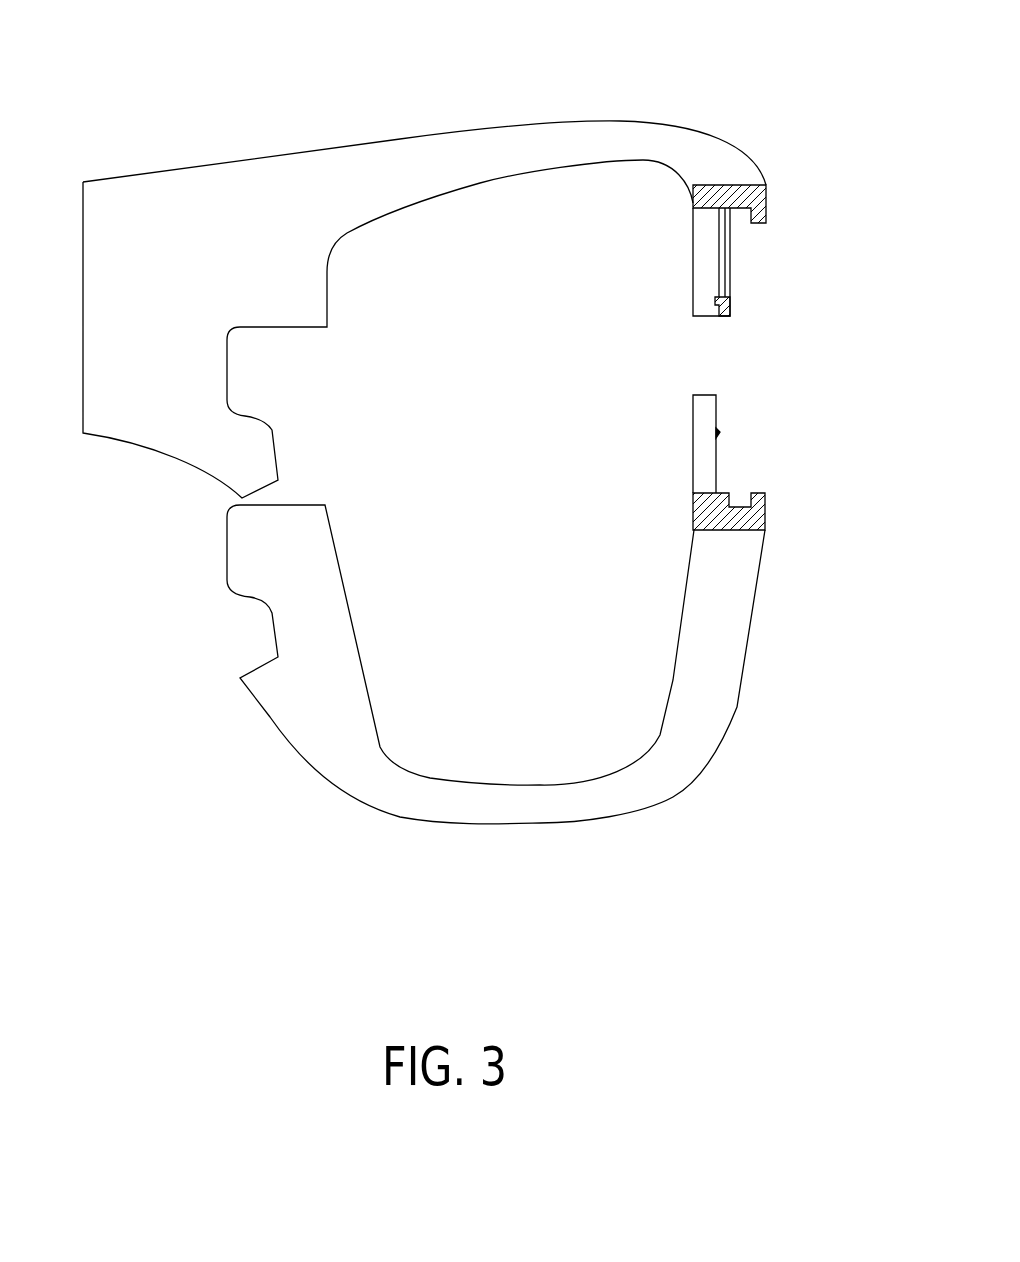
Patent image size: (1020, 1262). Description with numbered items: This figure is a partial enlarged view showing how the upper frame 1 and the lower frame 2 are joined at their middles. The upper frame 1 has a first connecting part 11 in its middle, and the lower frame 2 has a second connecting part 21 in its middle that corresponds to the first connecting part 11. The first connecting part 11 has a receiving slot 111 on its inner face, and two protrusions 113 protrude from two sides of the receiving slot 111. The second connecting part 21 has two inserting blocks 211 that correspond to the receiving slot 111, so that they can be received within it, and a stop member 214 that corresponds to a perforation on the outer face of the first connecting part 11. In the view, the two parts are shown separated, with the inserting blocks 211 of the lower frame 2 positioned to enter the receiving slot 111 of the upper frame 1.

The upper frame 1 is at (600, 122).
The first connecting part 11 is at (728, 302).
The receiving slot 111 is at (710, 242).
The protrusions 113 is at (726, 243).
The lower frame 2 is at (748, 653).
The second connecting part 21 is at (722, 492).
The inserting blocks 211 is at (705, 402).
The stop member 214 is at (721, 432).